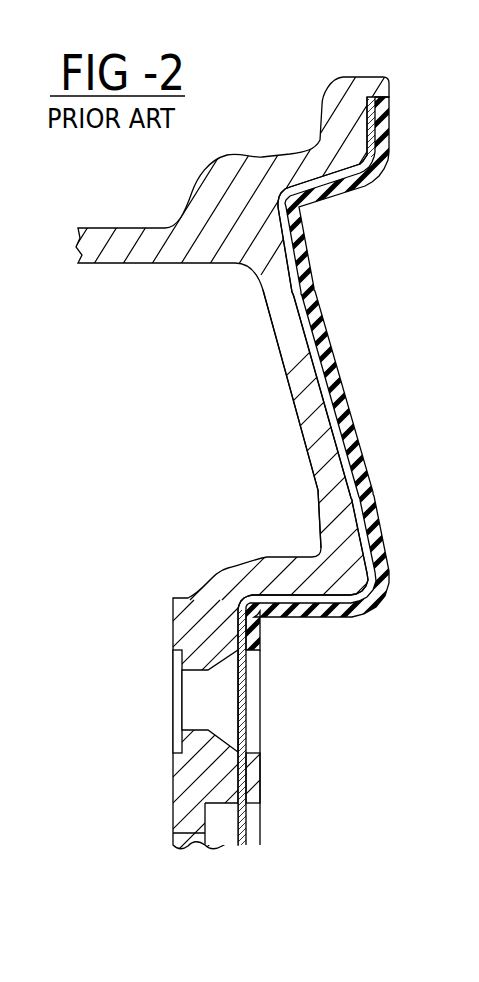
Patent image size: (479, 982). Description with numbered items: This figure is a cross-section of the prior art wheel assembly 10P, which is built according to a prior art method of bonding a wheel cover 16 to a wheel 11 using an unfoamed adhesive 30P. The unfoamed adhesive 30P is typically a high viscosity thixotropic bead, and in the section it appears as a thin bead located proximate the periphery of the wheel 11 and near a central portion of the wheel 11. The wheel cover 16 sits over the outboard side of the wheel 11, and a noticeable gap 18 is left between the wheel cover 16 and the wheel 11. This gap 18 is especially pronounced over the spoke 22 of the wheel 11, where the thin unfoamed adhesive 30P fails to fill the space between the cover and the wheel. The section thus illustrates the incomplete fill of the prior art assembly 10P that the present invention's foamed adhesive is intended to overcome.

The prior art wheel assembly 10P is at (278, 122).
The wheel 11 is at (358, 66).
The wheel cover 16 is at (386, 157).
The gap 18 is at (310, 322).
The spoke 22 is at (307, 408).
The unfoamed adhesive 30P is at (374, 122).